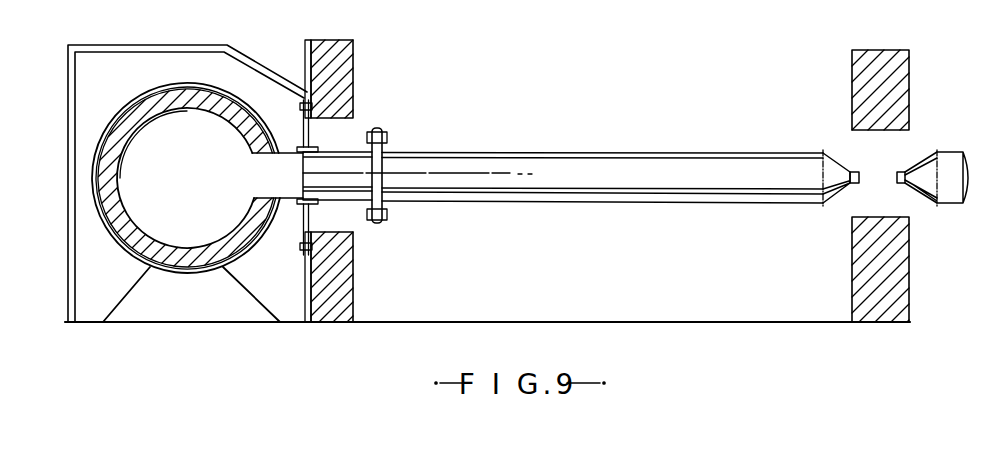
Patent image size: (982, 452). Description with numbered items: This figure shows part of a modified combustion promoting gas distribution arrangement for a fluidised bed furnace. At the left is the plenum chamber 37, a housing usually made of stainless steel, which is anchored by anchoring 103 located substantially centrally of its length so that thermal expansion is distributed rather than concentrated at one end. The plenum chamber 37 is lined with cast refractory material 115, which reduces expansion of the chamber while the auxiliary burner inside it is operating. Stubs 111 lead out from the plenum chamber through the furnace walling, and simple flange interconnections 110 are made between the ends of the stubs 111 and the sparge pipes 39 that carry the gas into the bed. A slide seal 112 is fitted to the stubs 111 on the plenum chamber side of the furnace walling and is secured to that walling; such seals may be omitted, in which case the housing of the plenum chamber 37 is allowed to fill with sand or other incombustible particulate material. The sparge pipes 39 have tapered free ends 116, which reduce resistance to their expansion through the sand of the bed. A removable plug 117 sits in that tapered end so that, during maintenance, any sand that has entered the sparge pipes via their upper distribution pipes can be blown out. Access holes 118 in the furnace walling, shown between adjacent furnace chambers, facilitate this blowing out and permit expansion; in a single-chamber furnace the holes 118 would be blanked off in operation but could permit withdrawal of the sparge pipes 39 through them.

The plenum chamber 37 is at (160, 88).
The sparge pipes 39 is at (635, 170).
The anchoring 103 is at (187, 297).
The flange interconnections 110 is at (384, 134).
The stubs 111 is at (335, 157).
The slide seal 112 is at (299, 109).
The cast refractory material 115 is at (165, 246).
The free ends 116 is at (836, 156).
The removable plug 117 is at (856, 186).
The access holes 118 is at (900, 137).